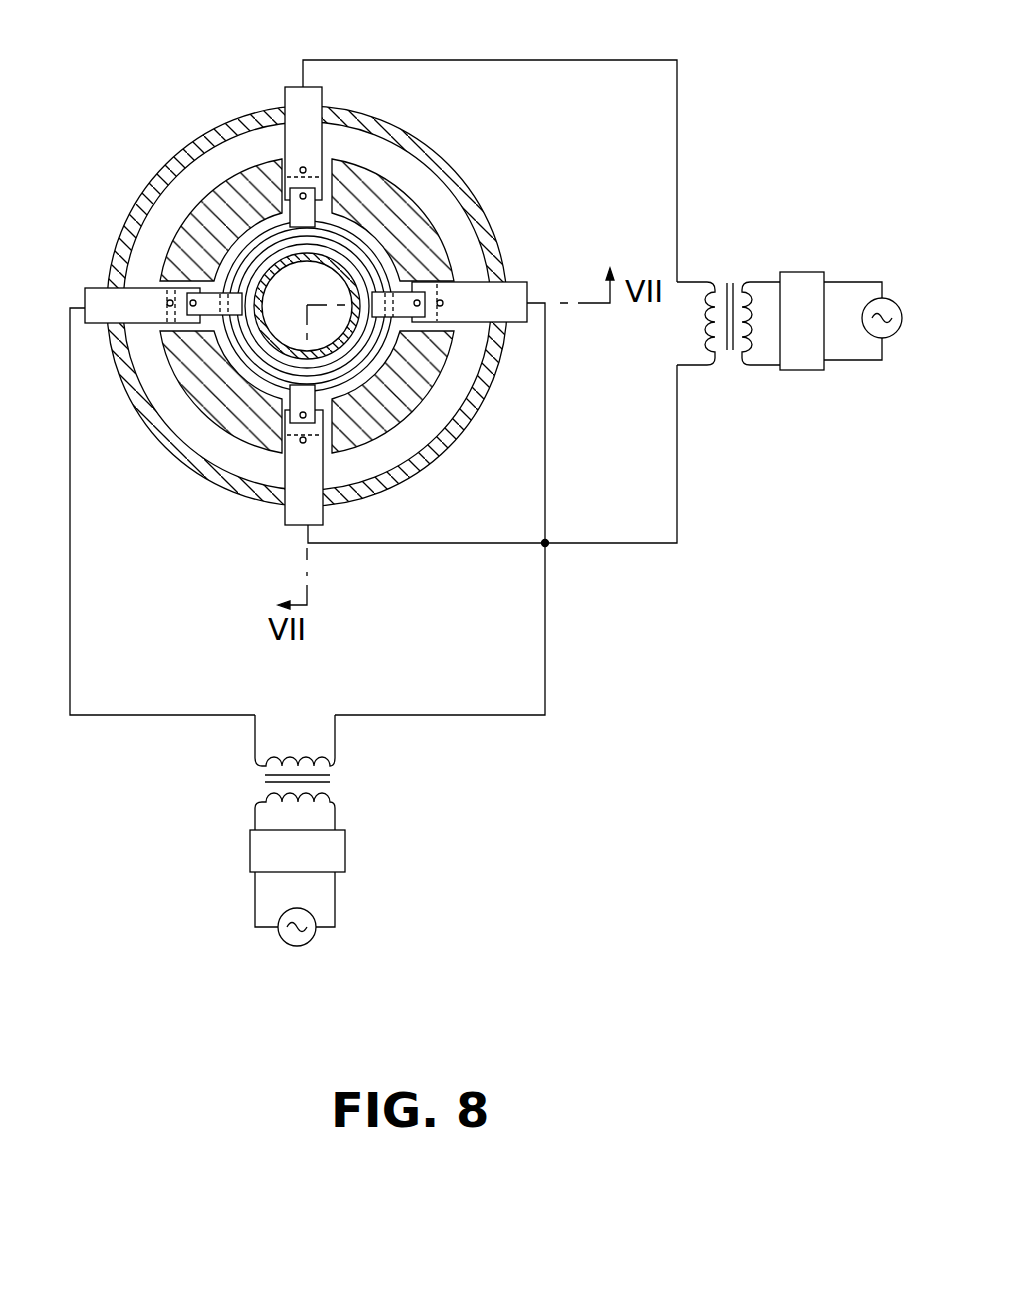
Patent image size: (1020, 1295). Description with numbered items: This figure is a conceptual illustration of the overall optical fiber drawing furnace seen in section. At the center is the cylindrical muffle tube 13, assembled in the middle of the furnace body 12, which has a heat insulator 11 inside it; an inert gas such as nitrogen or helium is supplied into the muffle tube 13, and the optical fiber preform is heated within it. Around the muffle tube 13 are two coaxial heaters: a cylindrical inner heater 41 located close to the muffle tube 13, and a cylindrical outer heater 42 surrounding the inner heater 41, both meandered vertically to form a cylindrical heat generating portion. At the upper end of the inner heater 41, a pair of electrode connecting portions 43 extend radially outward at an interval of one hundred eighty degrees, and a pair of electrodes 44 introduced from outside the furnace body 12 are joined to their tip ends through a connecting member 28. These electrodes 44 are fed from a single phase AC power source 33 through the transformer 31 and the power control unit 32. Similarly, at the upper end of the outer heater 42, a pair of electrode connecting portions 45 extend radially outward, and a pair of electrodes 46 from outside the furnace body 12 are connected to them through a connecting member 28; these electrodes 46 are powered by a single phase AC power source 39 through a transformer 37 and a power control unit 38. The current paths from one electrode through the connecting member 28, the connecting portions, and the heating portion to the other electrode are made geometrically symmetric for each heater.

The heat insulator 11 is at (402, 212).
The furnace body 12 is at (502, 261).
The muffle tube 13 is at (275, 266).
The connecting member 28 is at (288, 183).
The transformer 31 is at (349, 777).
The power control unit 32 is at (340, 850).
The AC power source 33 is at (312, 936).
The transformer 37 is at (731, 272).
The power control unit 38 is at (805, 271).
The single phase AC power source 39 is at (880, 340).
The inner heater 41 is at (418, 428).
The outer heater 42 is at (212, 412).
The electrode connecting portions 43 is at (250, 370).
The electrodes 44 is at (103, 302).
The electrode connecting portions 45 is at (317, 200).
The electrodes 46 is at (300, 86).